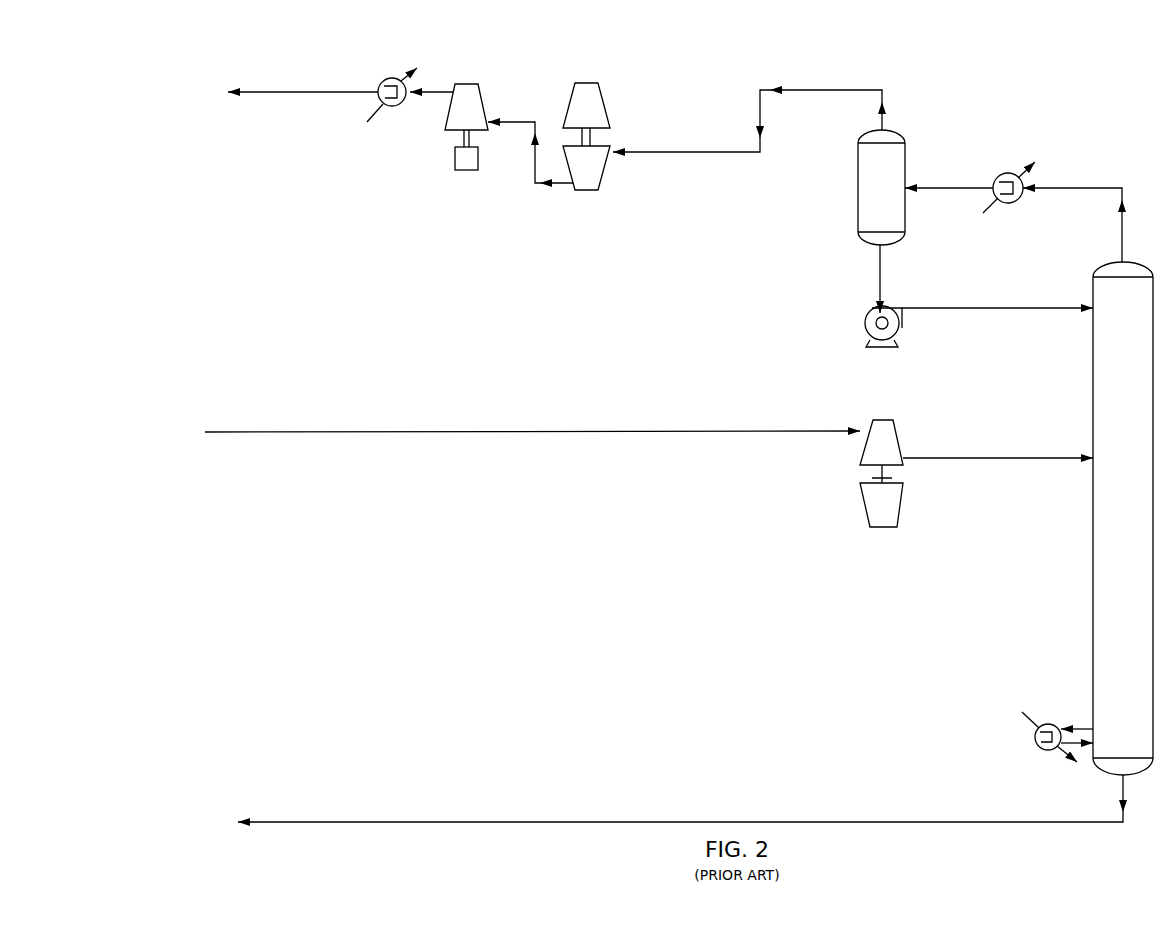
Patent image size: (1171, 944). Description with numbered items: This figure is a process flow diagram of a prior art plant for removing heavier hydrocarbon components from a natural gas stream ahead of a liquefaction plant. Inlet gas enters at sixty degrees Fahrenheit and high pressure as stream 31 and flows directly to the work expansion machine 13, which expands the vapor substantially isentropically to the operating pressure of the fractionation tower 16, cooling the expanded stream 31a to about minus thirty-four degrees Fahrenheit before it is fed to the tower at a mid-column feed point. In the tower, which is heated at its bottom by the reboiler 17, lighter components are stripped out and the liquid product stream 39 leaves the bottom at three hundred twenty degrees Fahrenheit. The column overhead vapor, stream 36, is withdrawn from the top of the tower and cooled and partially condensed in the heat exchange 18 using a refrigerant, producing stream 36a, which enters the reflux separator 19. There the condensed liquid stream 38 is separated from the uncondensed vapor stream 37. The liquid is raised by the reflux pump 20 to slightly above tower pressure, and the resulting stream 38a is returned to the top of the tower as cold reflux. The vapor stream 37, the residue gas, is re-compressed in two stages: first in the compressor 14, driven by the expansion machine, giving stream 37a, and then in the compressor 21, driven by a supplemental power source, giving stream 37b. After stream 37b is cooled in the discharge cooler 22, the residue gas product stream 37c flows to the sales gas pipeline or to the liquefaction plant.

The work expansion machine 13 is at (588, 83).
The compressor 14 is at (587, 190).
The fractionation tower 16 is at (1093, 518).
The reboiler 17 is at (1035, 737).
The heat exchange (reflux condenser) 18 is at (1019, 199).
The reflux separator 19 is at (858, 191).
The reflux pump 20 is at (870, 310).
The compressor 21 is at (466, 84).
The discharge cooler 22 is at (402, 104).
The inlet gas stream 31 is at (220, 432).
The expanded stream 31a is at (1000, 458).
The column overhead vapor stream 36 is at (1075, 188).
The partially condensed overhead stream 36a is at (953, 188).
The uncondensed vapor stream (residue gas) 37 is at (699, 152).
The first-stage compressed residue gas stream 37a is at (535, 168).
The compressed residue gas stream 37b is at (439, 92).
The residue gas product stream 37c is at (262, 92).
The condensed liquid stream 38 is at (882, 266).
The reflux stream 38a is at (998, 308).
The liquid product stream 39 is at (313, 822).